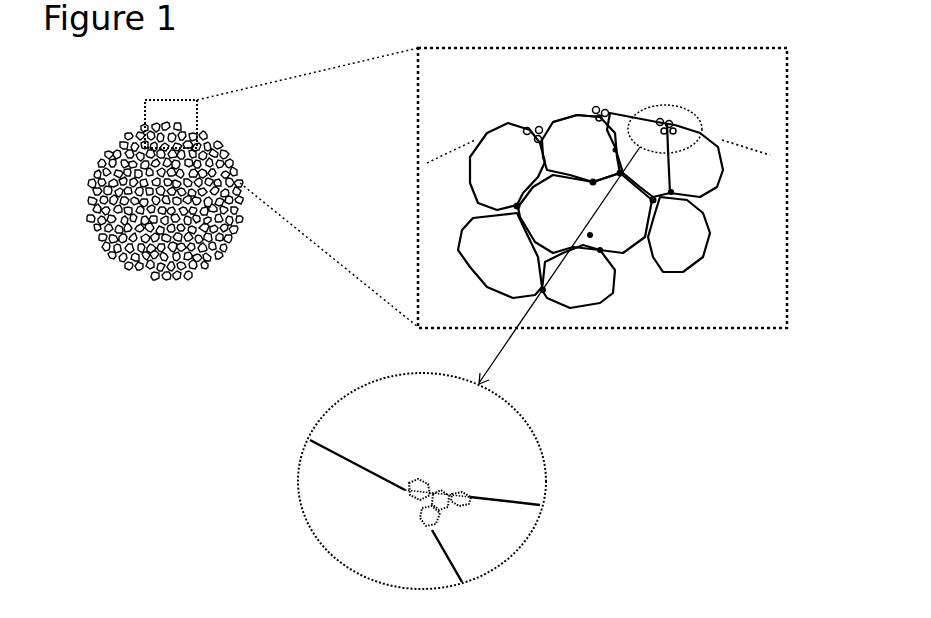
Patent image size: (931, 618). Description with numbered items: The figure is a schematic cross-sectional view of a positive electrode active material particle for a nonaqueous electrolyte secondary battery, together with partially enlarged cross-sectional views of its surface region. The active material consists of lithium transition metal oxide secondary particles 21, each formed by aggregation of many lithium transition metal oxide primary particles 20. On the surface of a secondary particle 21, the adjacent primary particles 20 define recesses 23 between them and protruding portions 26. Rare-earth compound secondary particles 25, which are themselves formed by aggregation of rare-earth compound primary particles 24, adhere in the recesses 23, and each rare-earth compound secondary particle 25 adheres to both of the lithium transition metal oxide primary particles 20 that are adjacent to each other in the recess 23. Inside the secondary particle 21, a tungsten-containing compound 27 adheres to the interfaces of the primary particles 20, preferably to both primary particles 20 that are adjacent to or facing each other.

The lithium transition metal oxide primary particle 20 is at (197, 121).
The lithium transition metal oxide secondary particle 21 is at (131, 81).
The recess 23 is at (535, 122).
The rare-earth compound primary particle 24 is at (677, 124).
The rare-earth compound secondary particle 25 is at (473, 483).
The protruding portion 26 is at (578, 112).
The tungsten-containing compound 27 is at (700, 200).